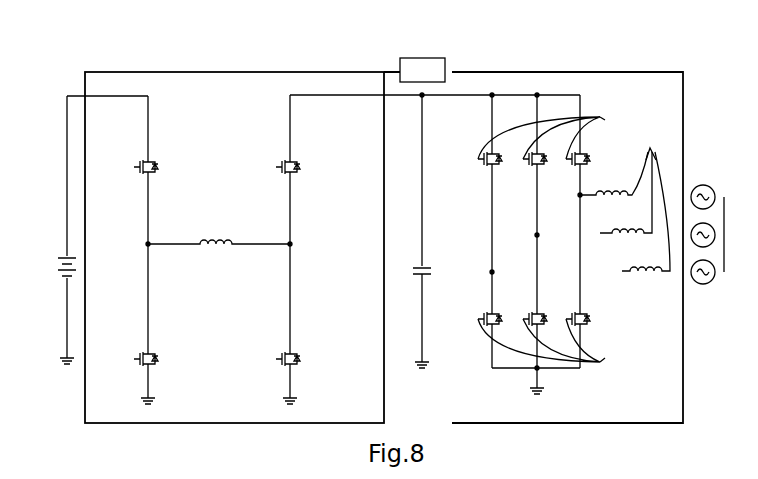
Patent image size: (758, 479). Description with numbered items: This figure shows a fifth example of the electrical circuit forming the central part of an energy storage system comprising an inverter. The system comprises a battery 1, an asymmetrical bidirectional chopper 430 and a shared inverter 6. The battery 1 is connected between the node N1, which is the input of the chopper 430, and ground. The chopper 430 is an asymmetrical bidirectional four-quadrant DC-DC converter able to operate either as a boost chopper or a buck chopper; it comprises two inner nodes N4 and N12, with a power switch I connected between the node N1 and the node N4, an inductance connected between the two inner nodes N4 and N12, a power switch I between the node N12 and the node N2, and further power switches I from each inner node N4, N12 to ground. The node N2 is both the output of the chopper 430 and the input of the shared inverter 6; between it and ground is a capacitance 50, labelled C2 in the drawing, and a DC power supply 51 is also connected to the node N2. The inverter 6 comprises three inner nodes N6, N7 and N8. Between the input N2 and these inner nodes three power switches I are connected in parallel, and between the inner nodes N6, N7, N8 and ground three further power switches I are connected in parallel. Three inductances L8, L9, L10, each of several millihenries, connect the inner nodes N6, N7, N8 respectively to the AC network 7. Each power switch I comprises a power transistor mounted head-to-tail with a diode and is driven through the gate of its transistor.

The battery 1 is at (60, 282).
The shared inverter 6 is at (568, 425).
The AC network 7 is at (700, 290).
The capacitance 50 is at (417, 284).
The DC power supply 51 is at (423, 57).
The asymmetrical bidirectional chopper 430 is at (229, 425).
The node N1 is at (79, 96).
The node N2 is at (420, 97).
The node N4 is at (145, 245).
The inner node N6 is at (490, 272).
The inner node N7 is at (535, 235).
The inner node N8 is at (560, 198).
The inner node N12 is at (293, 246).
The capacitor C2 is at (411, 231).
The inductor L8 is at (614, 173).
The inductor L9 is at (626, 192).
The inductor L10 is at (646, 211).
The power switch I is at (543, 239).